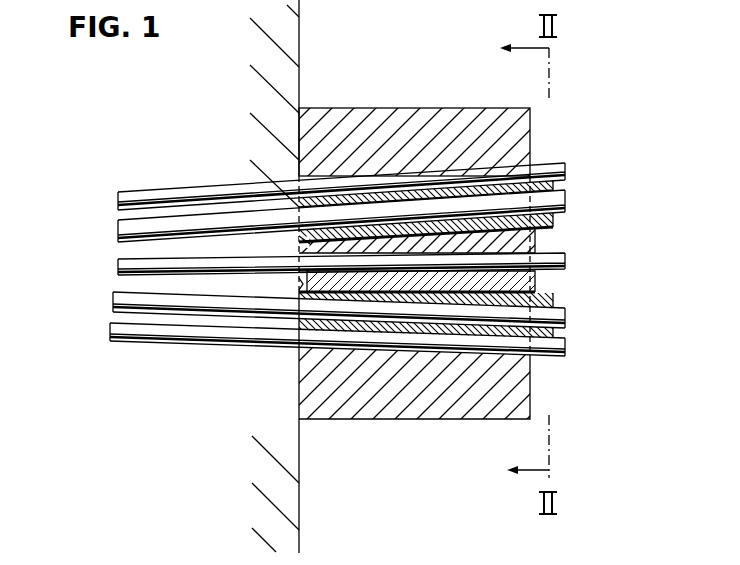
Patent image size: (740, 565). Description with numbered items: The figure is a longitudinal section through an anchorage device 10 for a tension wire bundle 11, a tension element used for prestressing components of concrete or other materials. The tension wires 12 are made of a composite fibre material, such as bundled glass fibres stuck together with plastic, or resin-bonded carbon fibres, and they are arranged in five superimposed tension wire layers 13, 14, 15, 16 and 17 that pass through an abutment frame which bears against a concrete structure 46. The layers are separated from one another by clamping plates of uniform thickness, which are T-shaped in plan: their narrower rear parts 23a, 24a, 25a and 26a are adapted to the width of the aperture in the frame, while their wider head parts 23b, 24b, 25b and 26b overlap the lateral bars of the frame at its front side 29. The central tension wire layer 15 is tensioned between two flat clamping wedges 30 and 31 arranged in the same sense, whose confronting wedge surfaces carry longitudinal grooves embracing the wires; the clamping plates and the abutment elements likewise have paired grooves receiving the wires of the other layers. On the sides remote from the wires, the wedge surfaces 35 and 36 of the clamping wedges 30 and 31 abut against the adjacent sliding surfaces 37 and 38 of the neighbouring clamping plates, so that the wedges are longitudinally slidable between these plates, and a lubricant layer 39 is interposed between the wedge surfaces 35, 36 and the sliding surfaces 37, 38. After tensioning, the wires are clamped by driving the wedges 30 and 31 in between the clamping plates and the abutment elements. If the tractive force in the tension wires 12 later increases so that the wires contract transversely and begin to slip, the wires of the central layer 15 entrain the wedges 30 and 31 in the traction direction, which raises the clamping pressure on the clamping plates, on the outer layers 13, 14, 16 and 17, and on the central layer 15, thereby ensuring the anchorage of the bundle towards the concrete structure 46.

The anchorage device 10 is at (419, 80).
The tension wire bundle 11 is at (131, 150).
The tension wires 12 is at (168, 190).
The tension wire layer 13 is at (104, 198).
The tension wire layer 14 is at (104, 231).
The central tension wire layer 15 is at (104, 266).
The tension wire layer 16 is at (100, 300).
The tension wire layer 17 is at (97, 335).
The narrower rear part of clamping plate 23a is at (360, 197).
The wider head part of clamping plate 23b is at (554, 187).
The narrower rear part of clamping plate 24a is at (300, 201).
The wider head part of clamping plate 24b is at (554, 221).
The narrower rear part of clamping plate 25a is at (299, 312).
The wider head part of clamping plate 25b is at (555, 302).
The narrower rear part of clamping plate 26a is at (299, 328).
The wider head part of clamping plate 26b is at (555, 335).
The front side of abutment frame 29 is at (531, 116).
The clamping wedge 30 is at (537, 240).
The clamping wedge 31 is at (537, 283).
The wedge surface 35 is at (299, 238).
The wedge surface 36 is at (306, 284).
The sliding surface 37 is at (391, 230).
The sliding surface 38 is at (393, 294).
The lubricant layer 39 is at (446, 233).
The concrete structure 46 is at (266, 477).